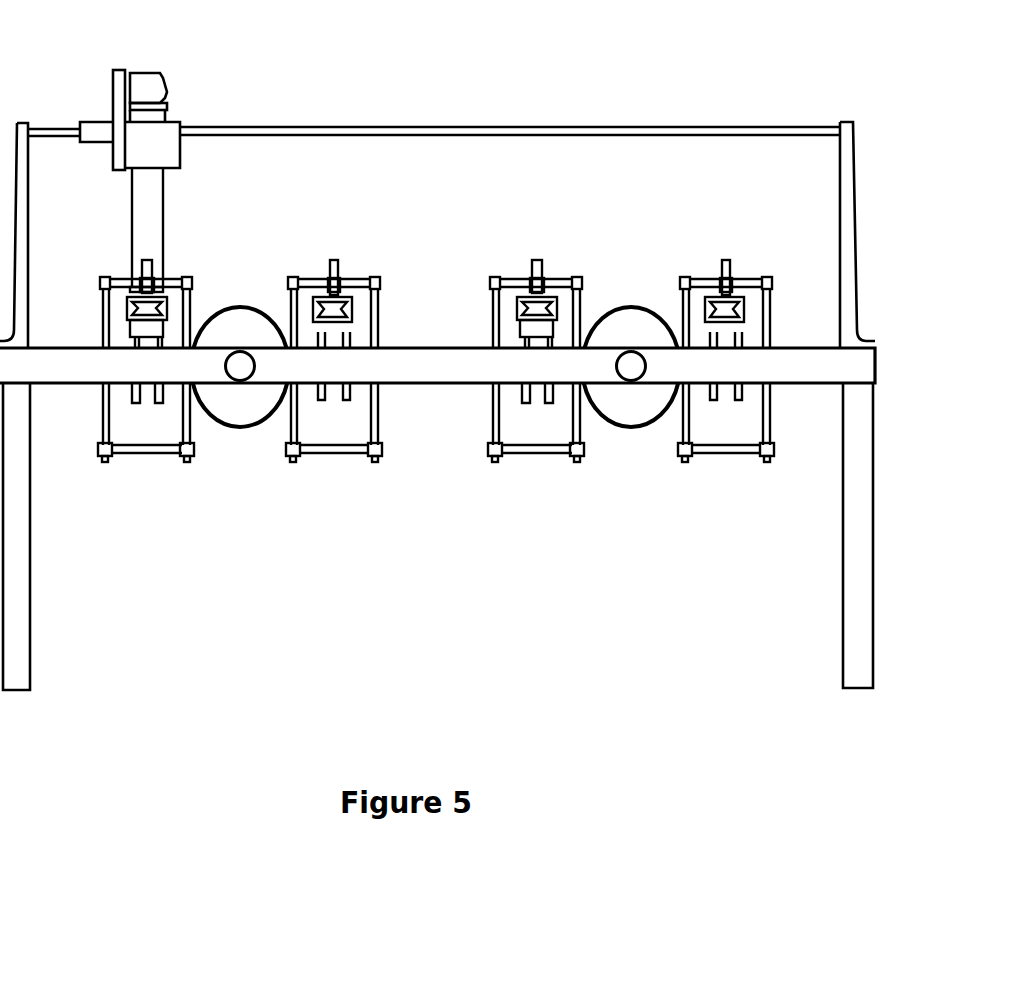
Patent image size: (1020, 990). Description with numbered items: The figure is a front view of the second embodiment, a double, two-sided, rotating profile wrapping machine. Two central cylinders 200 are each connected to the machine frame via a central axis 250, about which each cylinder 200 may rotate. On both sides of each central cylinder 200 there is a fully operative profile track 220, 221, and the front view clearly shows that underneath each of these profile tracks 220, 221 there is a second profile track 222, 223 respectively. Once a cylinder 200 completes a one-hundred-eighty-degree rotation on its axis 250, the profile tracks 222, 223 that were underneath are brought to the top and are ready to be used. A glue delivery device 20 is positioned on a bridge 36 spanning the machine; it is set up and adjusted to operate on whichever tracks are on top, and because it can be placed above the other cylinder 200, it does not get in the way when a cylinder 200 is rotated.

The glue delivery device 20 is at (135, 65).
The bridge 36 is at (826, 196).
The central cylinder 200 is at (240, 440).
The profile track 220 is at (341, 258).
The profile track 221 is at (530, 277).
The second profile track 222 is at (341, 442).
The second profile track 223 is at (530, 442).
The central axis 250 is at (240, 350).